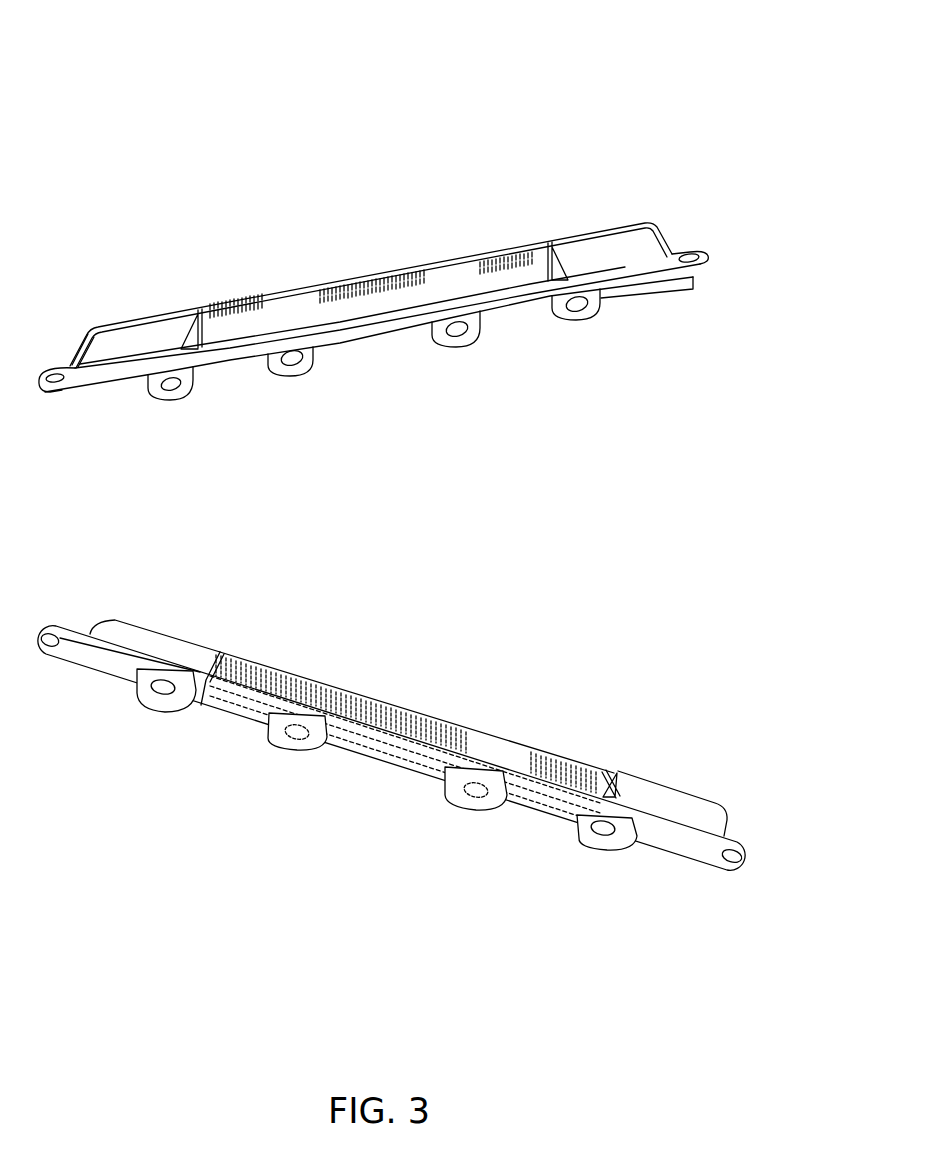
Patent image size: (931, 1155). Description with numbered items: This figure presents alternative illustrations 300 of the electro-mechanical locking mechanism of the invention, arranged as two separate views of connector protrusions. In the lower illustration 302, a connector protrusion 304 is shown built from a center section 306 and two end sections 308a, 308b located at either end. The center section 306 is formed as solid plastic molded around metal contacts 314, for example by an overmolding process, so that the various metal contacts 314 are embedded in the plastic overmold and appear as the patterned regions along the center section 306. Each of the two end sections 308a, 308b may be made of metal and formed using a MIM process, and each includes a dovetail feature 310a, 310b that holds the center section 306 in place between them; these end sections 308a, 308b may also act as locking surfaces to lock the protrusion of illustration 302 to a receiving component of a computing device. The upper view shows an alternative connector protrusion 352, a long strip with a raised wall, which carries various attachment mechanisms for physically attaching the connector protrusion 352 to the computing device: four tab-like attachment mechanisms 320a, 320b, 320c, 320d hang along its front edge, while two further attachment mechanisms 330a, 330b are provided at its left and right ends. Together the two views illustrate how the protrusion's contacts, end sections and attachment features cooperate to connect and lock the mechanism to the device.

The alternative illustrations 300 is at (137, 73).
The connector protrusion 352 is at (690, 196).
The attachment mechanism 330a is at (62, 366).
The attachment mechanism 330b is at (693, 290).
The attachment mechanism 320a is at (578, 320).
The attachment mechanism 320b is at (461, 347).
The attachment mechanism 320c is at (291, 376).
The attachment mechanism 320d is at (173, 400).
The illustration 302 is at (141, 918).
The connector protrusion 304 is at (758, 836).
The center section 306 is at (508, 743).
The end section 308a is at (182, 636).
The end section 308b is at (673, 793).
The dovetail feature 310a is at (204, 706).
The dovetail feature 310b is at (567, 817).
The metal contacts 314 is at (508, 740).